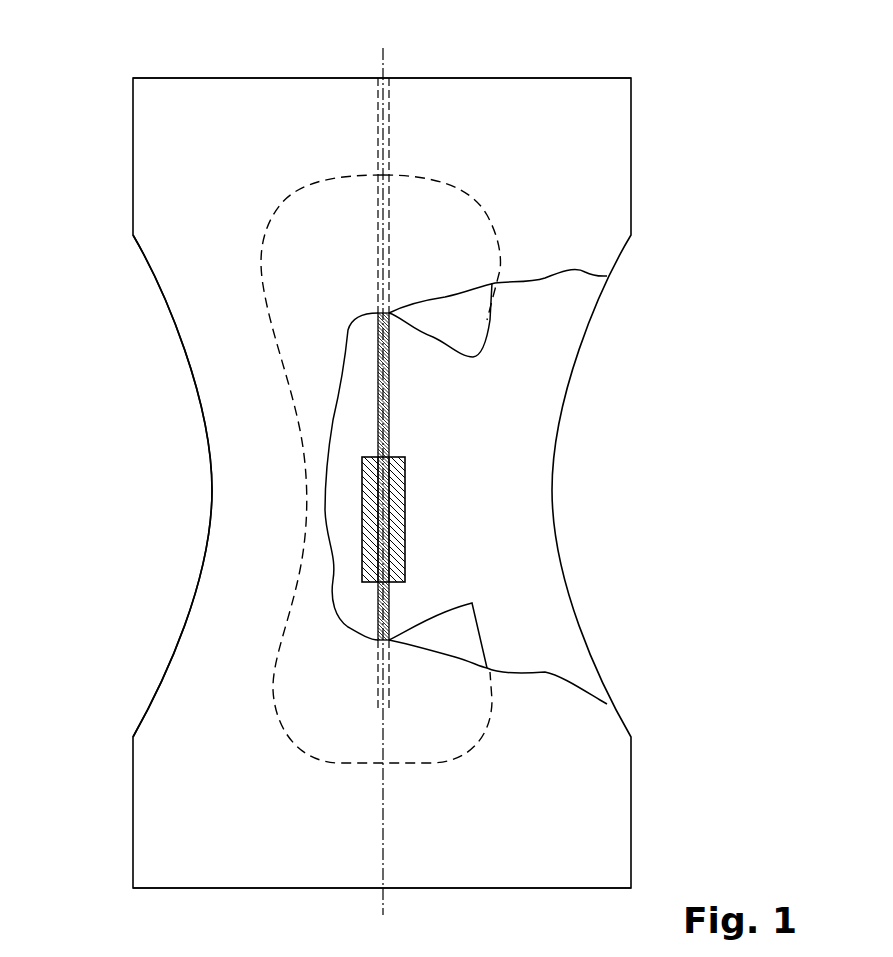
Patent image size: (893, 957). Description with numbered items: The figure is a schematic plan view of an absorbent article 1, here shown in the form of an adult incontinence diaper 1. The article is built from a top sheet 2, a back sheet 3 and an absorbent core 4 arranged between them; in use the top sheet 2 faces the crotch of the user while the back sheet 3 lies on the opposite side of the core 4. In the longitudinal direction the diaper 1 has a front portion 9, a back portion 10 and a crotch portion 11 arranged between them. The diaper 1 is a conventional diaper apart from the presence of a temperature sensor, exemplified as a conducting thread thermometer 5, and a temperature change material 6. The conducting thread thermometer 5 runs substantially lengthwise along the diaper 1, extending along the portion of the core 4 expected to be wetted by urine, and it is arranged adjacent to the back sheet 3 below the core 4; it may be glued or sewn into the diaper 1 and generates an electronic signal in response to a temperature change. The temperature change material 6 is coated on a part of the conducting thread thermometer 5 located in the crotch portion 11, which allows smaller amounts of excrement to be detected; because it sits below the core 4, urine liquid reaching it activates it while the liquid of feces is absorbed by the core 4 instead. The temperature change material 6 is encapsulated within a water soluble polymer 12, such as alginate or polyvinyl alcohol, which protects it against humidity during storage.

The absorbent article 1 is at (655, 100).
The top sheet 2 is at (592, 210).
The back sheet 3 is at (523, 398).
The absorbent core 4 is at (426, 215).
The conducting thread thermometer 5 is at (389, 438).
The temperature change material 6 is at (397, 502).
The front portion 9 is at (133, 793).
The back portion 10 is at (133, 148).
The crotch portion 11 is at (210, 517).
The water soluble polymer 12 is at (403, 552).